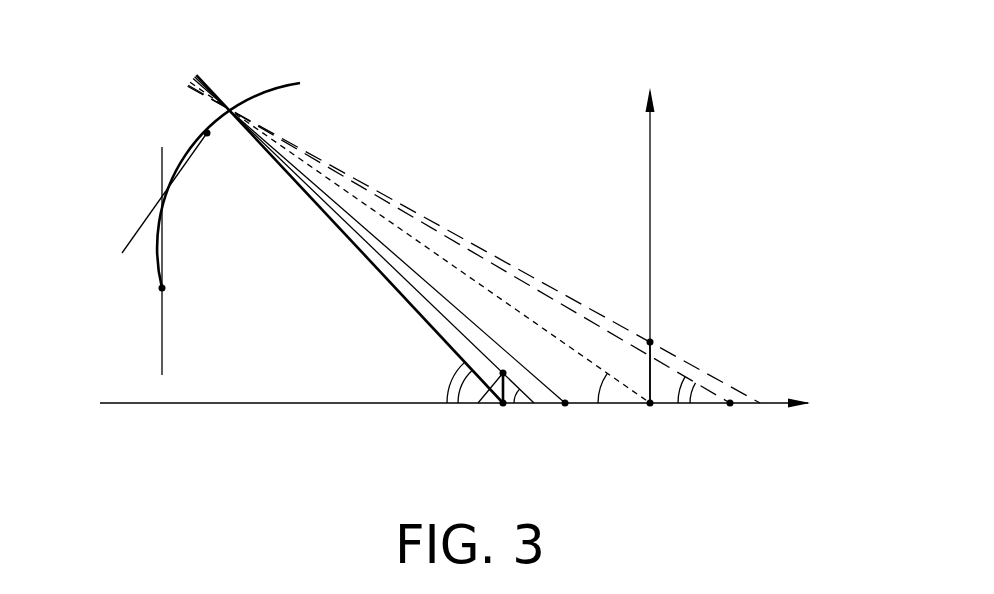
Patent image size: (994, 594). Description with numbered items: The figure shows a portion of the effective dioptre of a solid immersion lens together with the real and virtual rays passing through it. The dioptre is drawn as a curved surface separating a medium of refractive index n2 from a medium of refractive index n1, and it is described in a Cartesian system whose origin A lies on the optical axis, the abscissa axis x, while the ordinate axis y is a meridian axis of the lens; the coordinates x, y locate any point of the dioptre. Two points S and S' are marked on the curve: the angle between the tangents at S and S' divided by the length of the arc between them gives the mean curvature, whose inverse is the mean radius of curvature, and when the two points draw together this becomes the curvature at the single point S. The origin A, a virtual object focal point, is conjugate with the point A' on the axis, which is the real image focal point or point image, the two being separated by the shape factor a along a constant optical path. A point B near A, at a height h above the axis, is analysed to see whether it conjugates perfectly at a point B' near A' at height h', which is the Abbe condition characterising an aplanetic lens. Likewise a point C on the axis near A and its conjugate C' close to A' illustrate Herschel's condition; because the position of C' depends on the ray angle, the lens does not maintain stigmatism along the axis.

The point on the effective dioptre S is at (166, 110).
The second point on the effective dioptre S' is at (124, 288).
The refractive index n1 is at (214, 254).
The refractive index n2 is at (182, 185).
The origin A is at (422, 259).
The point in the vicinity of A B is at (474, 244).
The point on the optical axis in the vicinity of A C is at (462, 261).
The point image A' is at (353, 256).
The conjugate point of B B' is at (364, 240).
The conjugate point of C C' is at (383, 257).
The algebraic magnitude AB h is at (658, 372).
The algebraic magnitude A'B' h' is at (534, 378).
The abscissa coordinate x is at (455, 390).
The ordinate coordinate y is at (662, 245).